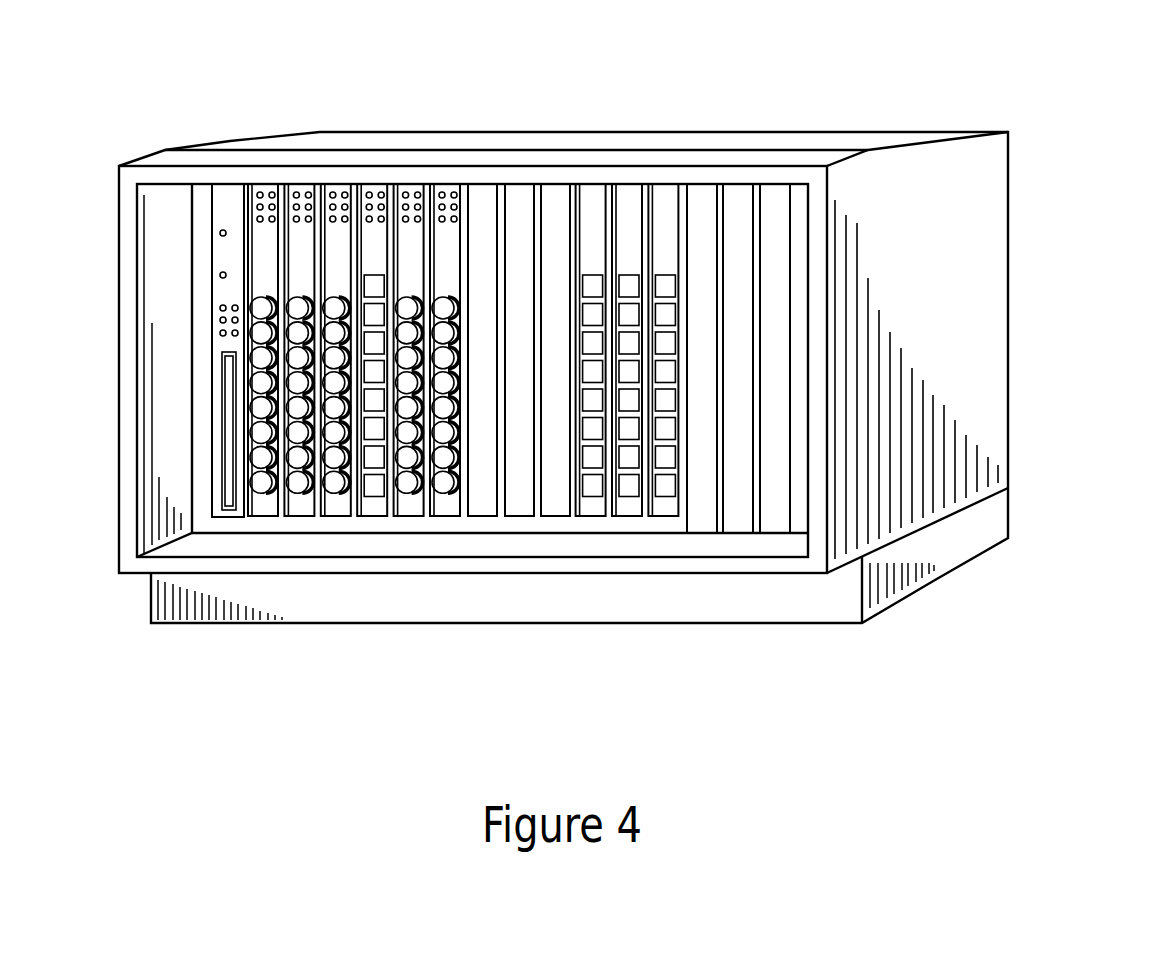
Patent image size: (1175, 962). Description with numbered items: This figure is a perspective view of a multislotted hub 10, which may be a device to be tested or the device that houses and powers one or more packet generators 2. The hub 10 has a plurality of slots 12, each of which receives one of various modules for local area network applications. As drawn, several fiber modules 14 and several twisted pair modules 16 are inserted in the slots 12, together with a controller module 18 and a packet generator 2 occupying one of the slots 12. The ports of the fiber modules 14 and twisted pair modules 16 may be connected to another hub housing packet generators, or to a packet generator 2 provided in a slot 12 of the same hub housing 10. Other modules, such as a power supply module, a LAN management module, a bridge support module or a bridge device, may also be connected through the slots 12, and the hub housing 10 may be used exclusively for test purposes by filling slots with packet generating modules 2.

The hub 10 is at (1010, 238).
The packet generator 2 is at (662, 198).
The slot 12 is at (733, 203).
The fiber module 14 is at (262, 505).
The twisted pair module 16 is at (373, 200).
The controller module 18 is at (226, 200).